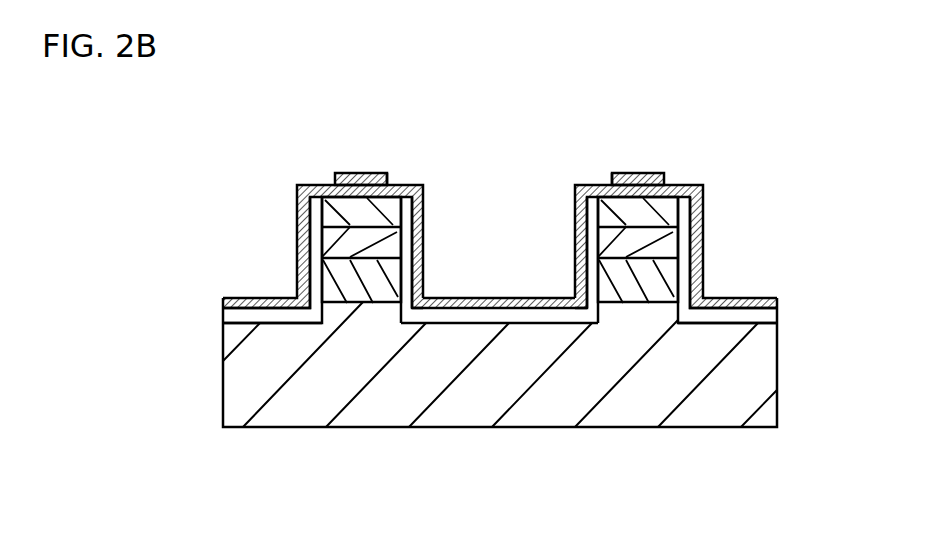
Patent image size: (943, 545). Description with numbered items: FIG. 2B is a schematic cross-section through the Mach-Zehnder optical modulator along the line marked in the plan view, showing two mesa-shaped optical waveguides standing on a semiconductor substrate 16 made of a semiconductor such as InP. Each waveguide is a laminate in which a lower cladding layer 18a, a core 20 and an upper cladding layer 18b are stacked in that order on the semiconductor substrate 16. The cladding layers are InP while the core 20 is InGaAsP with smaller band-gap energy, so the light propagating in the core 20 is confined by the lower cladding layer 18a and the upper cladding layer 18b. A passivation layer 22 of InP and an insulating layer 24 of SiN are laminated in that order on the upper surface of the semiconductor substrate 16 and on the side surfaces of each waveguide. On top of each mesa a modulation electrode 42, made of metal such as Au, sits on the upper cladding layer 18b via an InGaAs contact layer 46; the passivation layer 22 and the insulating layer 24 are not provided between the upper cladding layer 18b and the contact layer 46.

The semiconductor substrate 16 is at (755, 398).
The lower cladding layer 18a is at (310, 270).
The upper cladding layer 18b is at (297, 190).
The core 20 is at (323, 228).
The passivation layer 22 is at (462, 313).
The insulating layer 24 is at (525, 298).
The modulation electrode 42 is at (364, 173).
The contact layer 46 is at (383, 180).